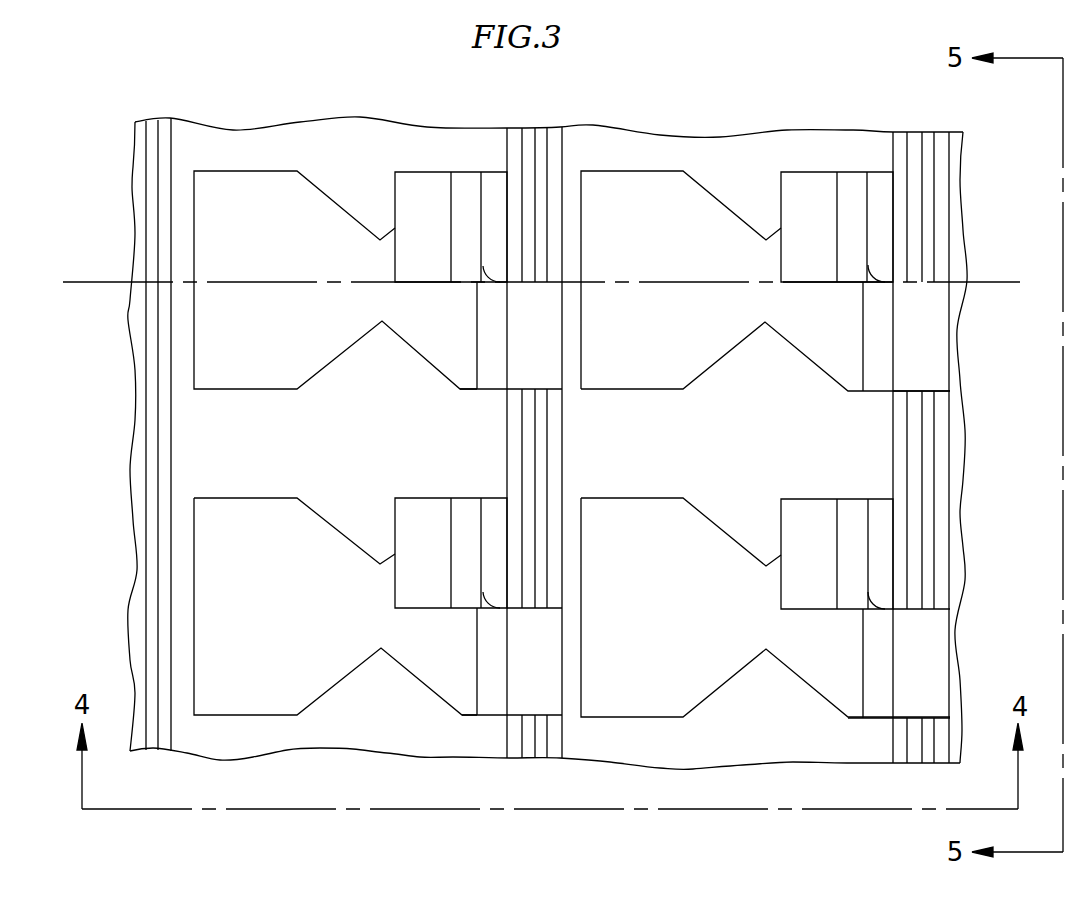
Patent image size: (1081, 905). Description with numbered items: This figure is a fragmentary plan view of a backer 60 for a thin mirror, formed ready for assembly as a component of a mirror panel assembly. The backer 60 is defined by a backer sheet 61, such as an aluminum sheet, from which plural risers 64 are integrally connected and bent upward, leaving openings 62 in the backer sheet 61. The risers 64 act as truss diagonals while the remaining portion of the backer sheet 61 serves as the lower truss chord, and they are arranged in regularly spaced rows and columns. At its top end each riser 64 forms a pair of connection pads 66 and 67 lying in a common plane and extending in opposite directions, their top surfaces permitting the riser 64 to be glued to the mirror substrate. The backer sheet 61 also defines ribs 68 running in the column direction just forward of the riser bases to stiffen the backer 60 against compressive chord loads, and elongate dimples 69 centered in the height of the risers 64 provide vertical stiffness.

The backer 60 is at (205, 98).
The backer sheet 61 is at (598, 145).
The openings 62 is at (195, 350).
The risers 64 is at (468, 170).
The connection pad 66 is at (413, 187).
The connection pad 67 is at (537, 367).
The ribs 68 is at (522, 742).
The dimples 69 is at (493, 268).